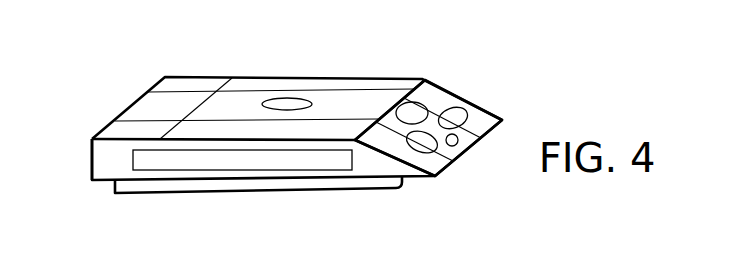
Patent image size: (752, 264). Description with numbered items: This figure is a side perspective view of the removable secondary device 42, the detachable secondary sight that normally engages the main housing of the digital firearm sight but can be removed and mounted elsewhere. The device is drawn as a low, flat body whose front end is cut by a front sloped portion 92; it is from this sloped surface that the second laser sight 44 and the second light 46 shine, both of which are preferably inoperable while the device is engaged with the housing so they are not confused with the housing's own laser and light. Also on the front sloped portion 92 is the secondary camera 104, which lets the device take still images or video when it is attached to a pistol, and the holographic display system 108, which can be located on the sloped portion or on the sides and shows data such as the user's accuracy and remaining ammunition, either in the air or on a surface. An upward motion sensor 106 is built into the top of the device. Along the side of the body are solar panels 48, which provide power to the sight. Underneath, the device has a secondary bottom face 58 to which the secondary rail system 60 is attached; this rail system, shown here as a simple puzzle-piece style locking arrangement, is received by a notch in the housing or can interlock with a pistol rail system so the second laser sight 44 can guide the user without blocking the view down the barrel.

The removable secondary device 42 is at (123, 75).
The second laser sight 44 is at (423, 147).
The second light 46 is at (458, 118).
The solar panels 48 is at (328, 163).
The secondary bottom face 58 is at (95, 181).
The secondary rail system 60 is at (223, 193).
The front sloped portion 92 is at (433, 100).
The secondary camera 104 is at (453, 142).
The upward motion sensor 106 is at (283, 107).
The holographic display system 108 is at (407, 108).